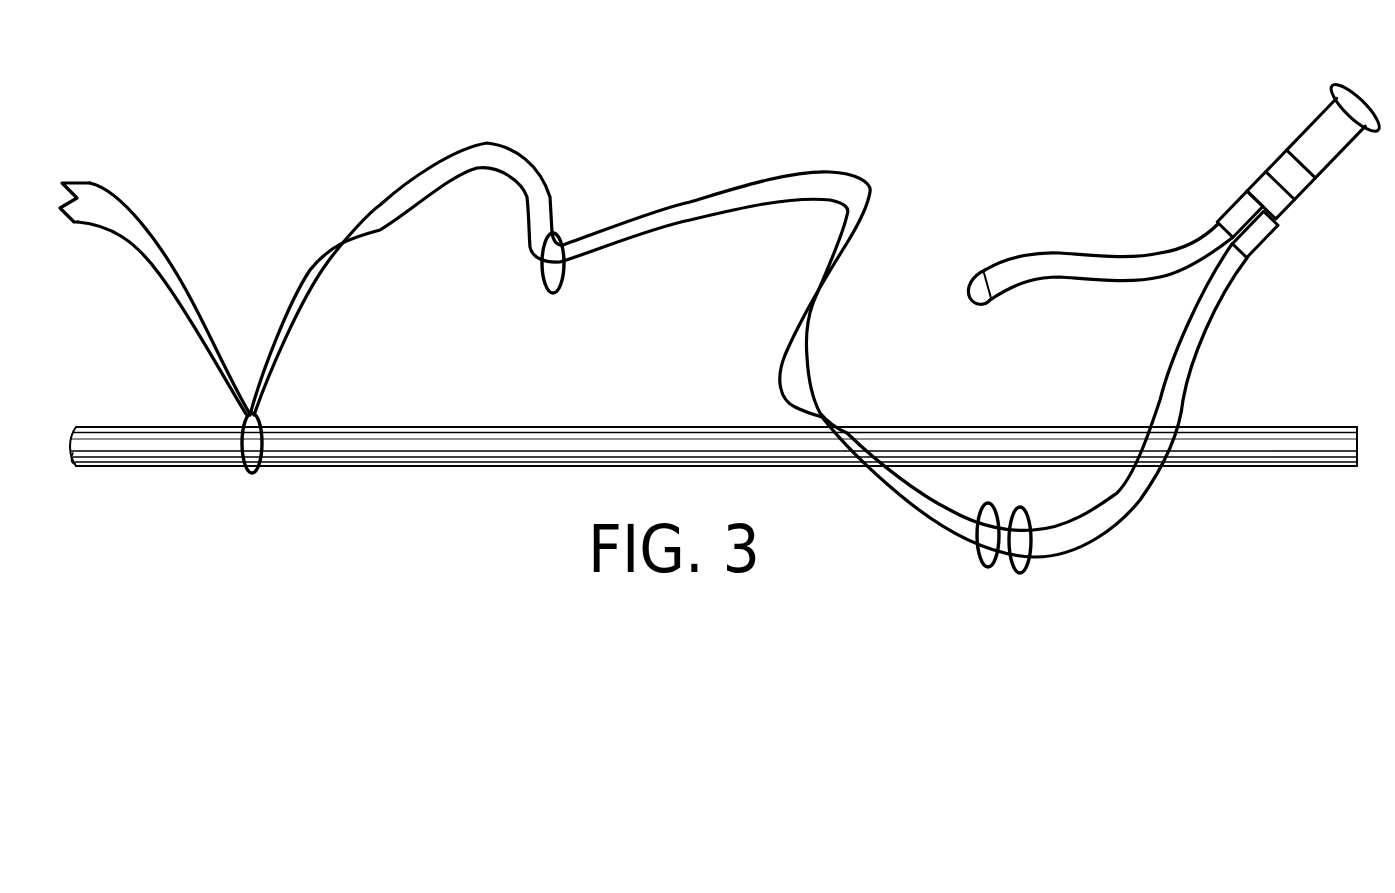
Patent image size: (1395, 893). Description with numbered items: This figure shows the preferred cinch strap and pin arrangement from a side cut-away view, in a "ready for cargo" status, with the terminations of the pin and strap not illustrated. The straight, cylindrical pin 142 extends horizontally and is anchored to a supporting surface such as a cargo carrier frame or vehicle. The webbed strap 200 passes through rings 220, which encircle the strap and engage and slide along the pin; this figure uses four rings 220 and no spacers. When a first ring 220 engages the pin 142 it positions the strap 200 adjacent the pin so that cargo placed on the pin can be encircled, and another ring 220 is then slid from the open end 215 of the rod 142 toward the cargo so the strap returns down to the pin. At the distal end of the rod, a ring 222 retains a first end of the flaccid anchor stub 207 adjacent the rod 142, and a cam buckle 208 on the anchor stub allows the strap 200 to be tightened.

The pin 142 is at (437, 467).
The strap 200 is at (398, 198).
The anchor stub 207 is at (1312, 138).
The buckle 208 is at (1258, 196).
The open end 215 is at (1360, 444).
The ring 220 is at (253, 472).
The ring 222 is at (1334, 91).